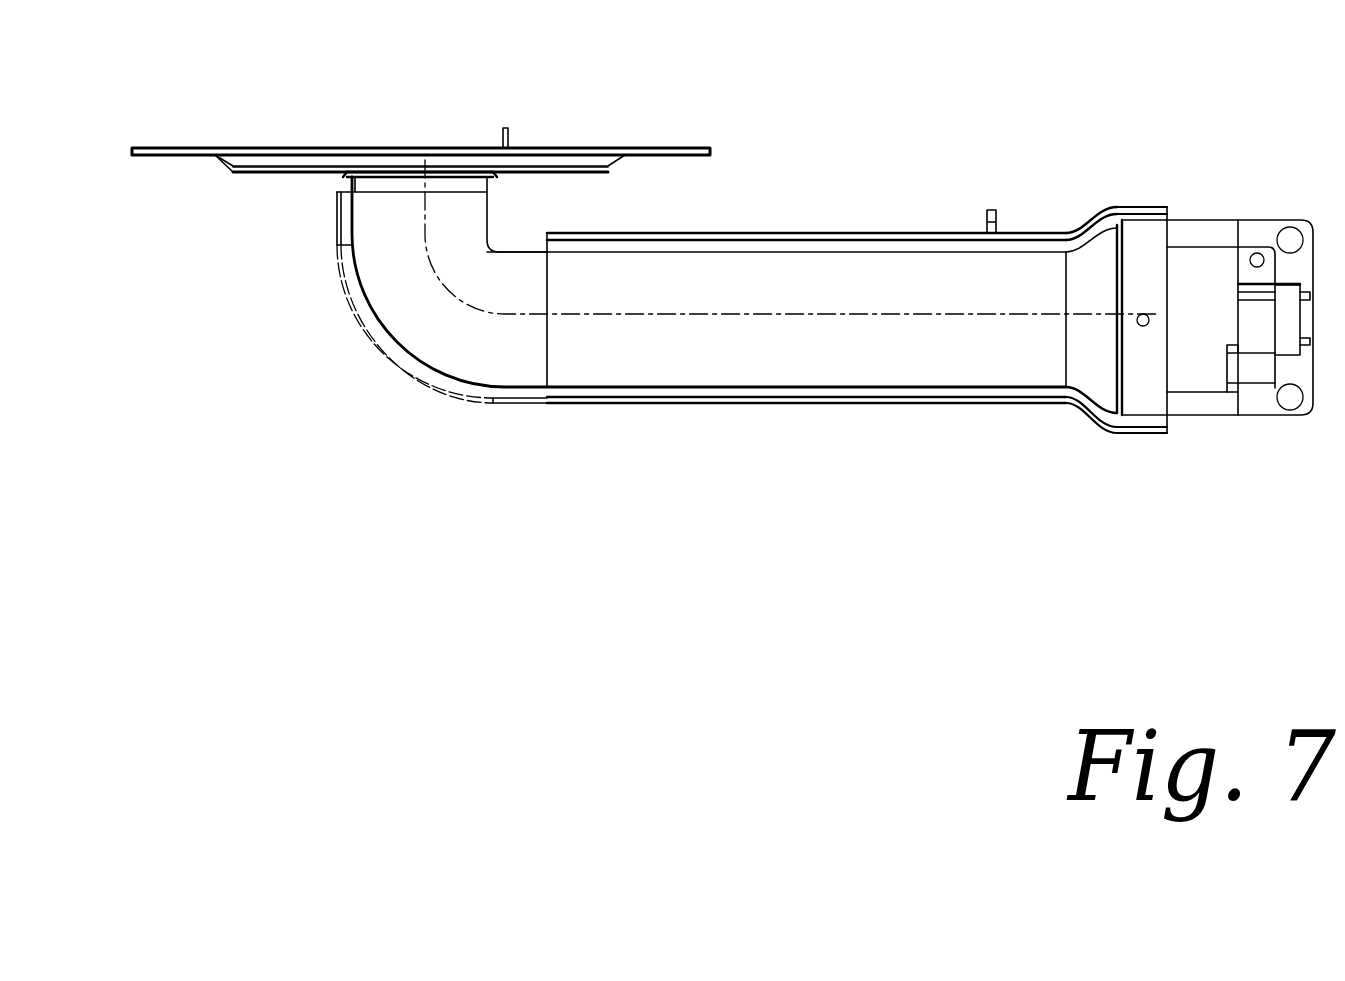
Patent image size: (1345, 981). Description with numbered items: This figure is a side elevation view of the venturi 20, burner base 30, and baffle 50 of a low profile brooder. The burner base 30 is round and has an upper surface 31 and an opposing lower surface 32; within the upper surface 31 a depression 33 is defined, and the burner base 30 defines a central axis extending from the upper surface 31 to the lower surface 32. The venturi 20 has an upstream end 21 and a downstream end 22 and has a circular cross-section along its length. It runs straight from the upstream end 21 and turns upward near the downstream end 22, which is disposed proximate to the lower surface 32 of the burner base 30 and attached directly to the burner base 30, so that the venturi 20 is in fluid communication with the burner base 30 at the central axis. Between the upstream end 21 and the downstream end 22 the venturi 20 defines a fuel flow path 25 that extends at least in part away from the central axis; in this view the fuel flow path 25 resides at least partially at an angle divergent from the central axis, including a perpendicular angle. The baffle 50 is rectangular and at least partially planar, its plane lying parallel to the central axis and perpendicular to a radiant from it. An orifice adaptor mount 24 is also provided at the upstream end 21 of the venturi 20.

The venturi 20 is at (671, 345).
The upstream end 21 is at (1168, 427).
The downstream end 22 is at (350, 178).
The orifice adaptor mount 24 is at (1265, 403).
The fuel flow path 25 is at (797, 314).
The burner base 30 is at (675, 148).
The upper surface 31 is at (553, 168).
The lower surface 32 is at (231, 173).
The depression 33 is at (263, 163).
The baffle 50 is at (505, 128).